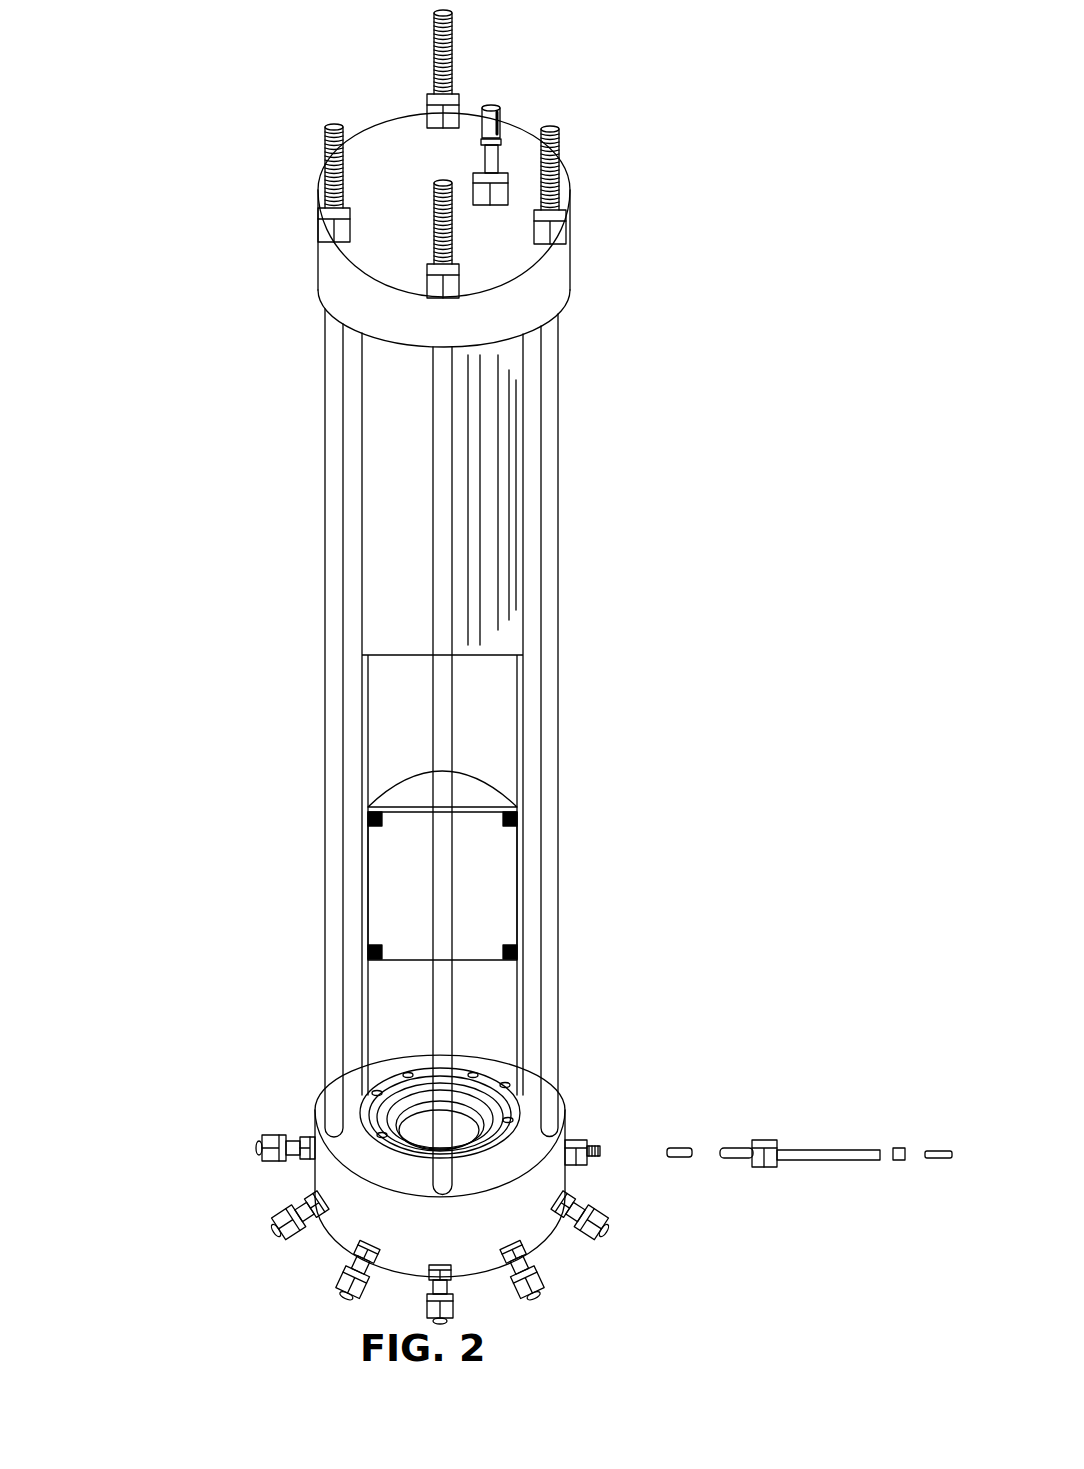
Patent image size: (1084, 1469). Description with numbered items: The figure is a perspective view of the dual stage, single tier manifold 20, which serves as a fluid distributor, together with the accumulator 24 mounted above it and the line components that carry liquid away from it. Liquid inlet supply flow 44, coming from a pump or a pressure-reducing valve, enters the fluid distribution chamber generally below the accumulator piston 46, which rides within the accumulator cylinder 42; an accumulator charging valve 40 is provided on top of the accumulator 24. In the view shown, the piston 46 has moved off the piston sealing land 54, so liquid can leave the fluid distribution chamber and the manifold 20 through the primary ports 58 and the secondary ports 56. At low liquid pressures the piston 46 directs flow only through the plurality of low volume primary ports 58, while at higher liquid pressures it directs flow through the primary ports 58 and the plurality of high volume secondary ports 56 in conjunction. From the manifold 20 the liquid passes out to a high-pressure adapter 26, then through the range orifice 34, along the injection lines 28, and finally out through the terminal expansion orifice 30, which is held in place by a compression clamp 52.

The single tier manifold 20 is at (370, 1157).
The accumulator 24 is at (542, 265).
The high-pressure adapters 26 is at (600, 1149).
The injection lines 28 is at (832, 1160).
The terminal expansion orifice 30 is at (940, 1158).
The range orifices 34 is at (677, 1157).
The accumulator charging valve 40 is at (500, 123).
The accumulator cylinder 42 is at (397, 493).
The inlet supply flow 44 is at (392, 1128).
The accumulator piston 46 is at (492, 877).
The compression clamp 52 is at (893, 1158).
The piston sealing land 54 is at (375, 1088).
The secondary port 56 is at (505, 1086).
The primary port 58 is at (512, 1118).